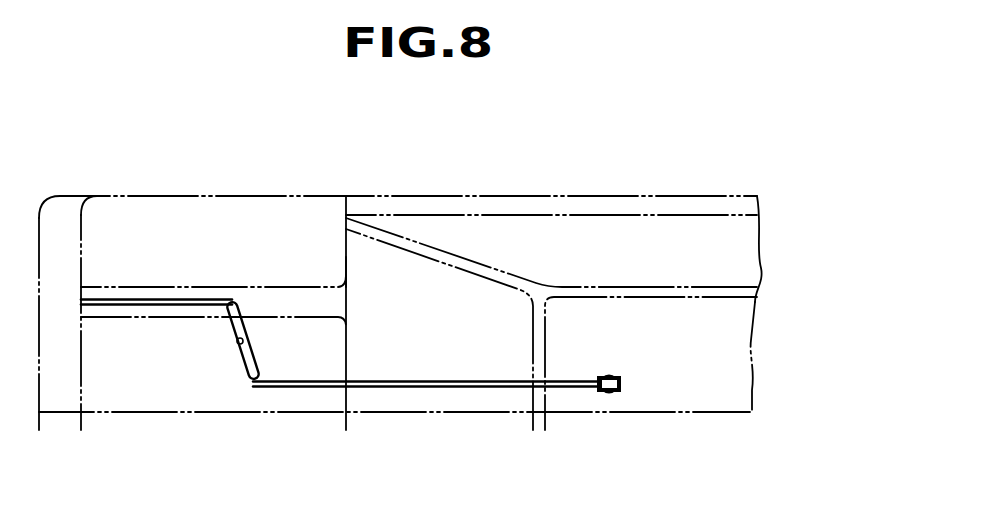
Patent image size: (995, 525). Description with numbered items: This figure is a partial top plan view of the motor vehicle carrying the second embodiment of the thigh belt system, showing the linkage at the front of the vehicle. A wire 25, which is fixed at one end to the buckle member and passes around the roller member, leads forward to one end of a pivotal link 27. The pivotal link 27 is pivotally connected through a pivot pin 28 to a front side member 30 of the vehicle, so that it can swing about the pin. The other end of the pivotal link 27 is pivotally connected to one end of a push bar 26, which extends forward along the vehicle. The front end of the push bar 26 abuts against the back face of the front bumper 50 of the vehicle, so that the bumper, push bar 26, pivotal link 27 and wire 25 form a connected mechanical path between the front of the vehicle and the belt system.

The front bumper 50 is at (58, 198).
The front side member 30 is at (290, 284).
The push bar 26 is at (140, 298).
The pivotal link 27 is at (248, 380).
The pivot pin 28 is at (239, 344).
The wire 25 is at (458, 388).